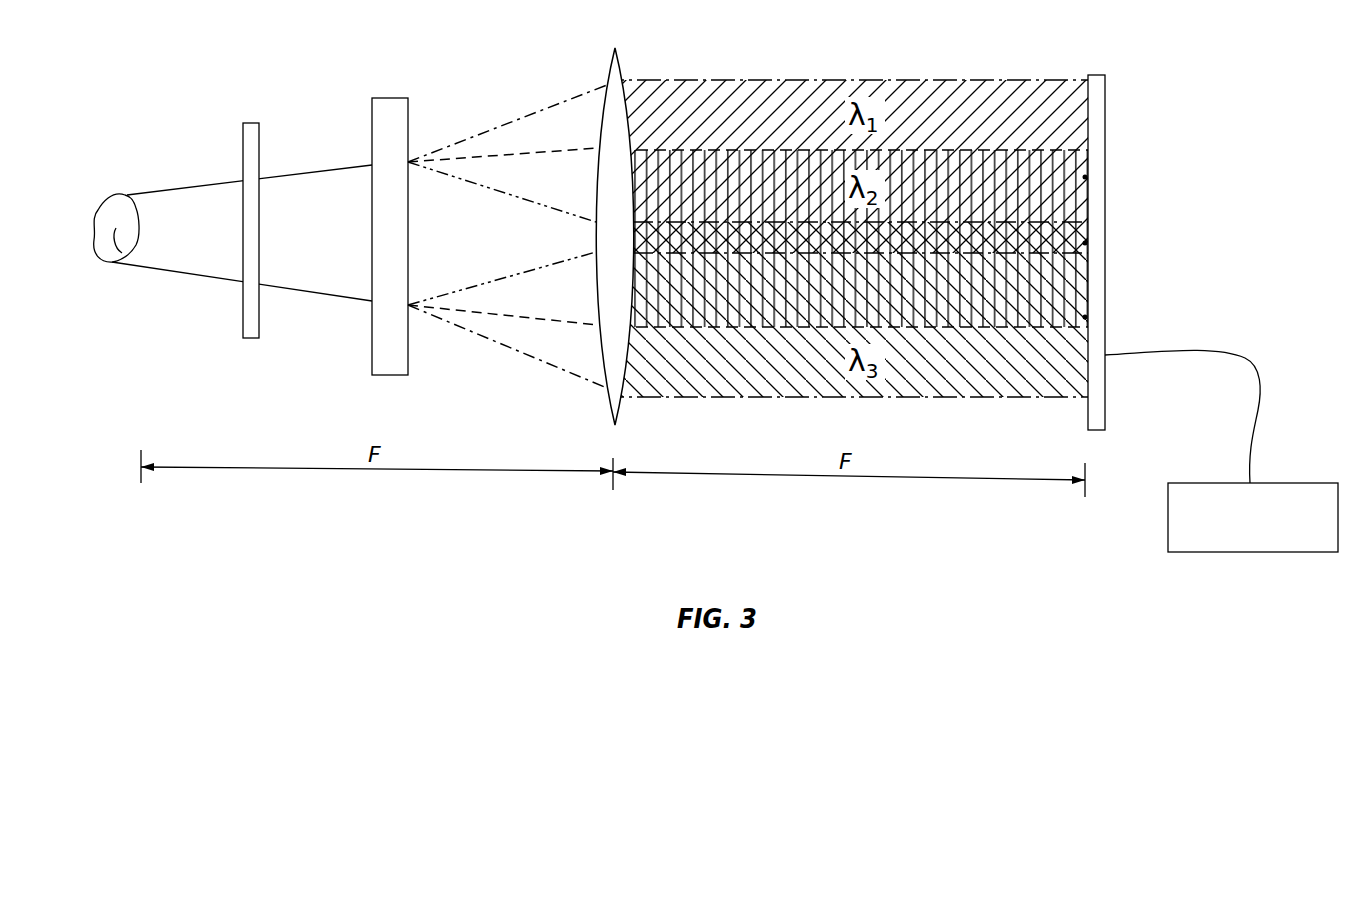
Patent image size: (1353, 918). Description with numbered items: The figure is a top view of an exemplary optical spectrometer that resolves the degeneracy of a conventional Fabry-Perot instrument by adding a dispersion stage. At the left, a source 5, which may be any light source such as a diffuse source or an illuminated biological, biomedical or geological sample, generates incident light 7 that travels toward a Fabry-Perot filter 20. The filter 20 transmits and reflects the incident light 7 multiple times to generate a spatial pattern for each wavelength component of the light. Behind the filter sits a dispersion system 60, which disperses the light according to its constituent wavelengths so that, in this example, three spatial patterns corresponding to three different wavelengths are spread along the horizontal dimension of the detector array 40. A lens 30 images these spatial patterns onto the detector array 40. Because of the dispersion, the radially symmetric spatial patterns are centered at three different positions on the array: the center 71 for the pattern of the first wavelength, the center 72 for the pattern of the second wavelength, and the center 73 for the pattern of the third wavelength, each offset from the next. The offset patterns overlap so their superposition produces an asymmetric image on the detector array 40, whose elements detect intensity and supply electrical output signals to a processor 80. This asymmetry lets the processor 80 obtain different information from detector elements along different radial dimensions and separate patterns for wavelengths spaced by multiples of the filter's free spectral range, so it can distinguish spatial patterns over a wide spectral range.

The source 5 is at (106, 262).
The incident light 7 is at (210, 218).
The Fabry-Perot filter 20 is at (250, 123).
The lens 30 is at (622, 60).
The detector array 40 is at (1098, 75).
The dispersion system 60 is at (389, 98).
The center for the spatial pattern corresponding to λ1 71 is at (1085, 177).
The center for the spatial pattern corresponding to λ2 72 is at (1085, 243).
The center for the spatial pattern corresponding to λ3 73 is at (1085, 317).
The processor 80 is at (1285, 483).